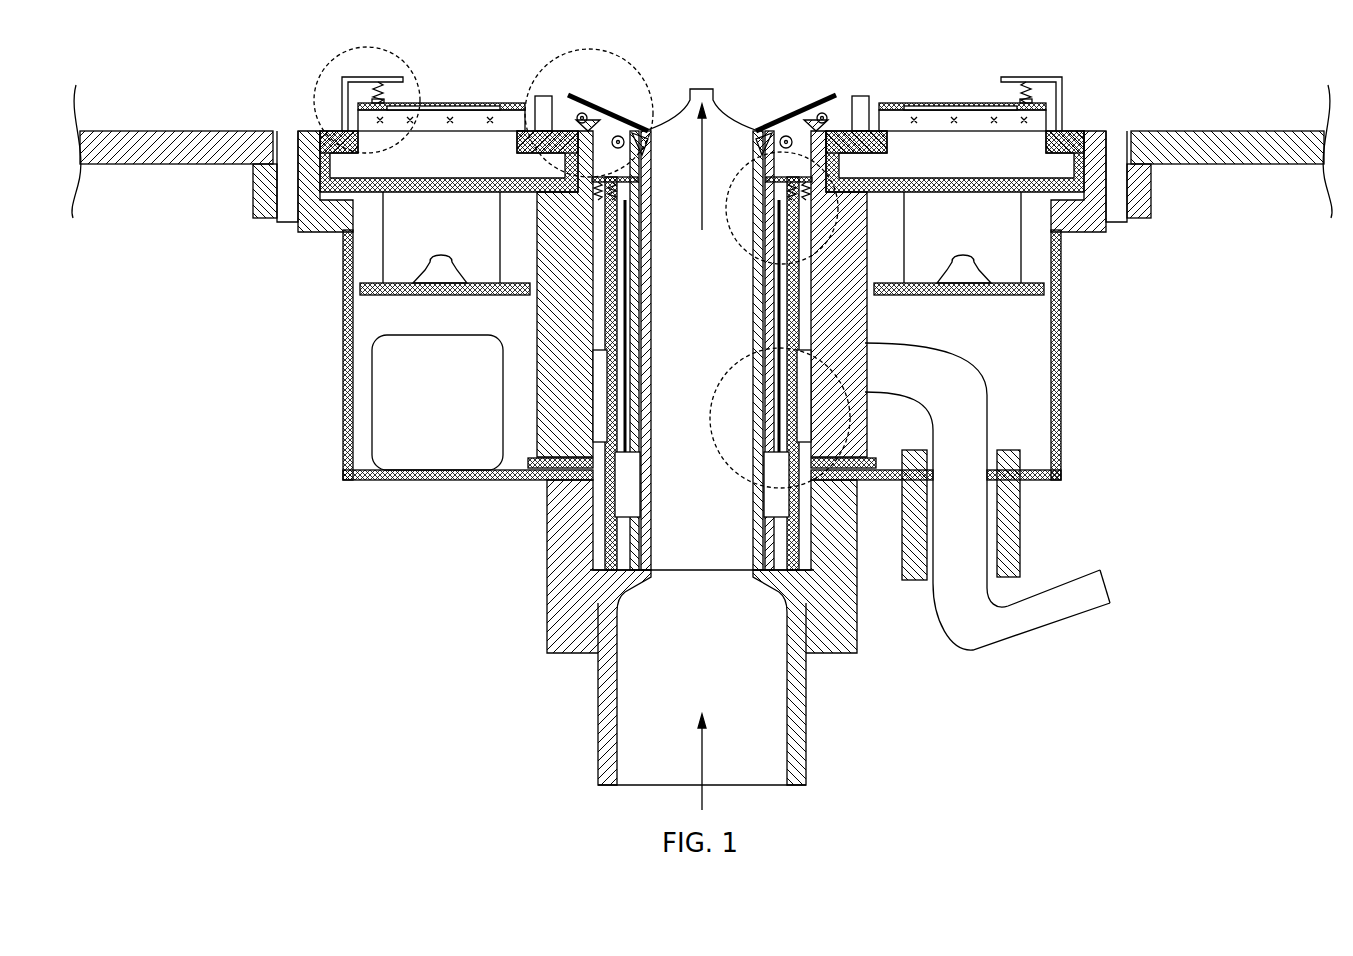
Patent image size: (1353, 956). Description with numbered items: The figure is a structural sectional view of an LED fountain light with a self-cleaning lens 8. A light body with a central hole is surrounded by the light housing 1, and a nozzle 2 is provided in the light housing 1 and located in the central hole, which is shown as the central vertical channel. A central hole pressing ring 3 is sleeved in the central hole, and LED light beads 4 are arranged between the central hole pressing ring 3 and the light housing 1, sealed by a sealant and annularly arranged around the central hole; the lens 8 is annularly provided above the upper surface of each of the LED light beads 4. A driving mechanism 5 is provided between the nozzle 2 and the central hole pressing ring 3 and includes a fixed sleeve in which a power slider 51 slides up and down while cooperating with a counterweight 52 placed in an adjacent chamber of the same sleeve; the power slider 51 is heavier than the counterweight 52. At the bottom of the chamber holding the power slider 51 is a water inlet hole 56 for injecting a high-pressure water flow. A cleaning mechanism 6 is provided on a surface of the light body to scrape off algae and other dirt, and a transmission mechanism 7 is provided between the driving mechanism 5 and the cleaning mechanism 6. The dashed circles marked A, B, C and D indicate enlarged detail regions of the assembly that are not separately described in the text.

The light housing 1 is at (1222, 142).
The nozzle 2 is at (716, 96).
The central hole pressing ring 3 is at (540, 318).
The LED light bead 4 is at (347, 260).
The driving mechanism 5 is at (588, 355).
The power slider 51 is at (613, 513).
The counterweight 52 is at (607, 413).
The water inlet hole 56 is at (600, 597).
The cleaning mechanism 6 is at (960, 84).
The transmission mechanism 7 is at (838, 92).
The lens 8 is at (1037, 162).
The hook detail A is at (960, 393).
The detail B is at (790, 110).
The detail C is at (548, 80).
The detail D is at (385, 74).